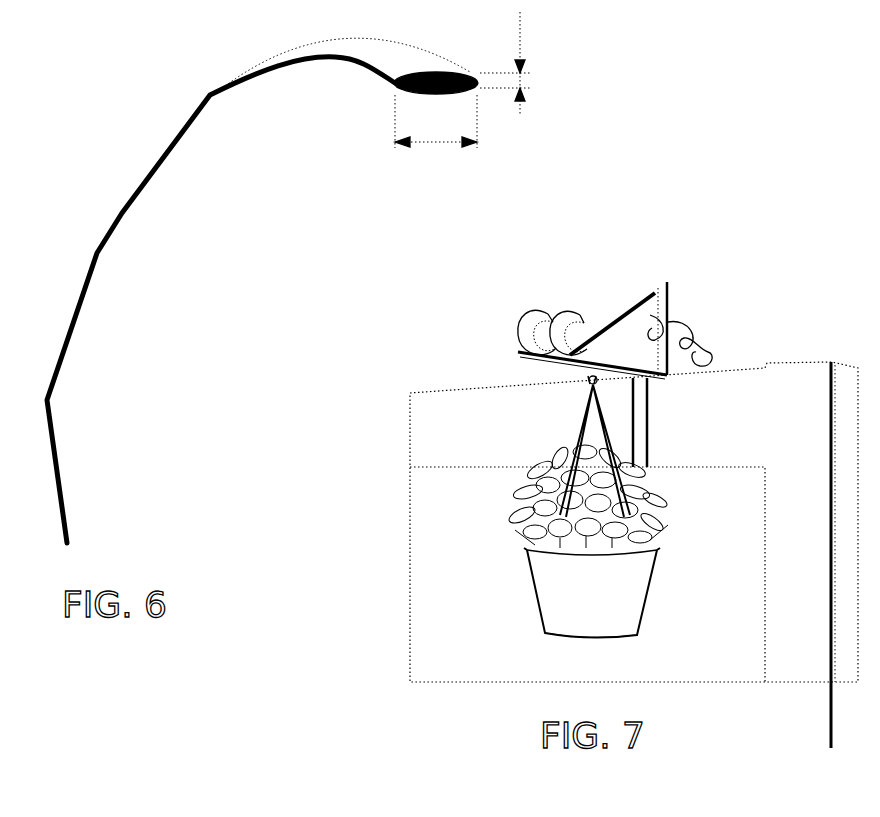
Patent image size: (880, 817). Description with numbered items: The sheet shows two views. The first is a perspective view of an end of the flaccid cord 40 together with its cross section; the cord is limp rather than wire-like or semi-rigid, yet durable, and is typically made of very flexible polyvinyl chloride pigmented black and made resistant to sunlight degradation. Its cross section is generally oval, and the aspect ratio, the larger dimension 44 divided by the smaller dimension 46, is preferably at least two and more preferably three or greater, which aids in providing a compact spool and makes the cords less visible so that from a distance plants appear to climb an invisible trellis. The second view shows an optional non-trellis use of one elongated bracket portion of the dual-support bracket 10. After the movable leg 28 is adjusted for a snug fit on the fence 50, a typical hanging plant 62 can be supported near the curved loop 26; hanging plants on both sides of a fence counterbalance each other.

In FIG. 7, the dual-support bracket 10 is at (710, 241).
In FIG. 7, the curved loop 26 is at (532, 322).
In FIG. 7, the movable leg 28 is at (649, 410).
In FIG. 6, the flaccid cord 40 is at (117, 217).
In FIG. 6, the cross section major dimension 44 is at (436, 121).
In FIG. 6, the cross section minor dimension 46 is at (528, 80).
In FIG. 7, the fence 50 is at (481, 621).
In FIG. 7, the hanging plant 62 is at (618, 613).